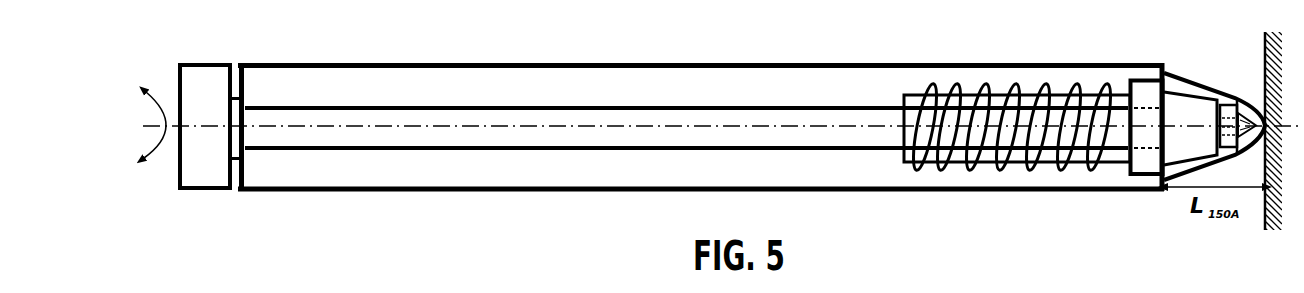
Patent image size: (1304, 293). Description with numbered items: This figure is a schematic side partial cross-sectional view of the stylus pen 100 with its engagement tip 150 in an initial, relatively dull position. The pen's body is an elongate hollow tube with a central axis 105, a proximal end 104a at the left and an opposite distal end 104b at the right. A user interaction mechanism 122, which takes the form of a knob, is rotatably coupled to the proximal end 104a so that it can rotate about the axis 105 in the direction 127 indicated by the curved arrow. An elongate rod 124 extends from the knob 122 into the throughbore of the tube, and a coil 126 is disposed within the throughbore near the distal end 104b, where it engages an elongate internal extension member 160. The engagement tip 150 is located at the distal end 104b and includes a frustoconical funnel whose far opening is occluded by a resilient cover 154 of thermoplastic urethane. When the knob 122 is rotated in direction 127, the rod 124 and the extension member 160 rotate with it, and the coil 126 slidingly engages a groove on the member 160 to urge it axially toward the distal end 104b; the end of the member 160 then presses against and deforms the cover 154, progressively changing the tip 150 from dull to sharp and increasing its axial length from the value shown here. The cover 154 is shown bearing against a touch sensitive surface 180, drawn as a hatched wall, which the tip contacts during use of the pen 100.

The stylus pen 100 is at (501, 31).
The central axis 105 is at (527, 129).
The user interaction mechanism 122 is at (208, 62).
The elongate rod 124 is at (373, 107).
The direction 127 is at (152, 163).
The proximal end 104a is at (239, 193).
The distal end 104b is at (1163, 192).
The coil 126 is at (993, 175).
The elongate internal extension member 160 is at (1123, 162).
The engagement tip 150 is at (1203, 70).
The resilient cover 154 is at (1253, 103).
The touch sensitive surface 180 is at (1265, 208).